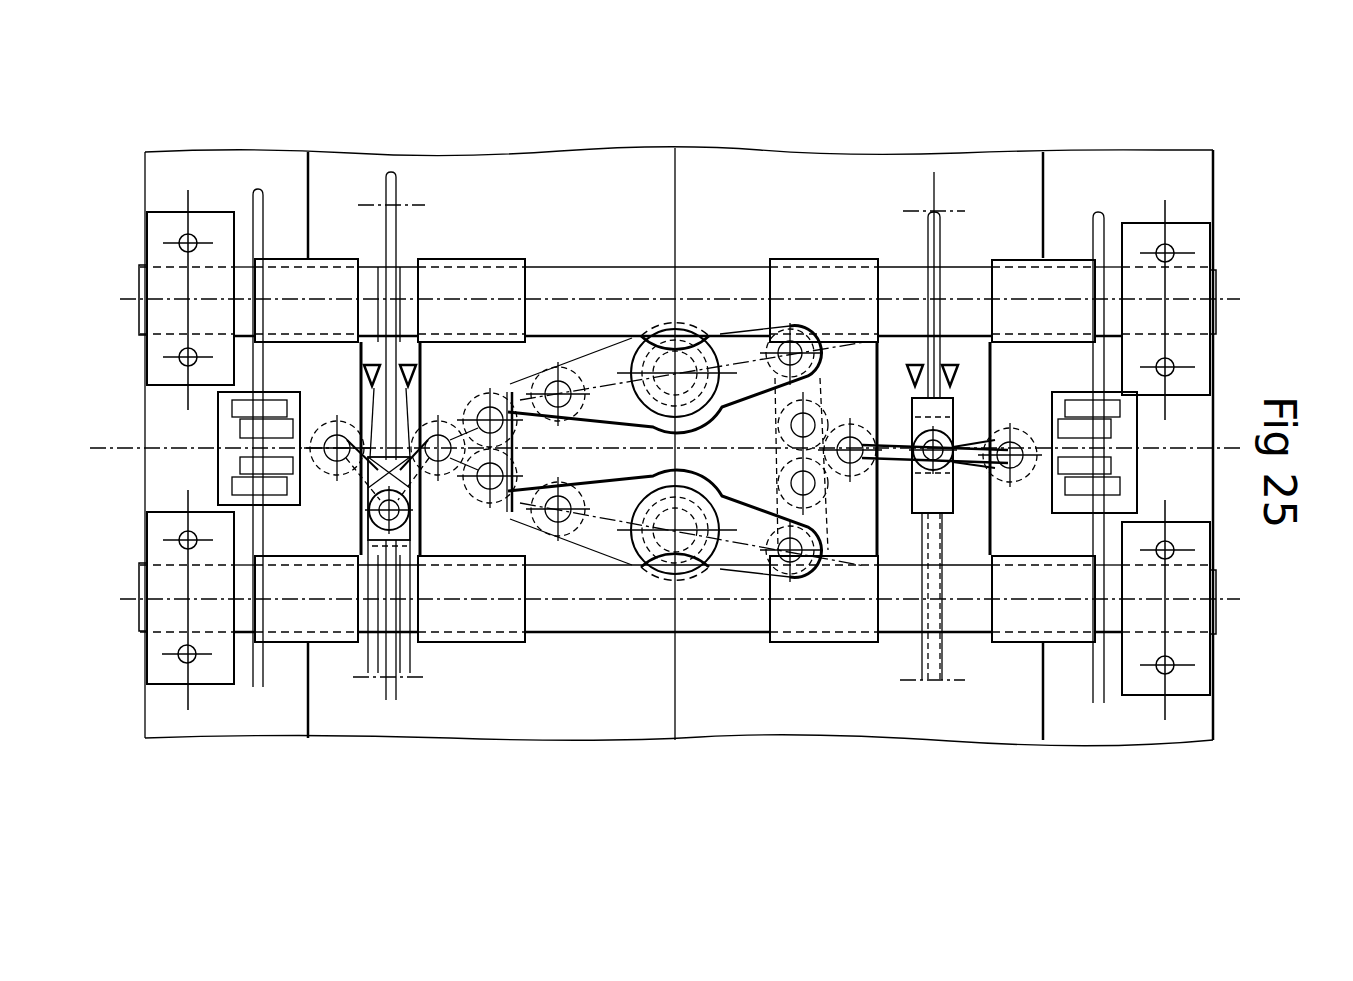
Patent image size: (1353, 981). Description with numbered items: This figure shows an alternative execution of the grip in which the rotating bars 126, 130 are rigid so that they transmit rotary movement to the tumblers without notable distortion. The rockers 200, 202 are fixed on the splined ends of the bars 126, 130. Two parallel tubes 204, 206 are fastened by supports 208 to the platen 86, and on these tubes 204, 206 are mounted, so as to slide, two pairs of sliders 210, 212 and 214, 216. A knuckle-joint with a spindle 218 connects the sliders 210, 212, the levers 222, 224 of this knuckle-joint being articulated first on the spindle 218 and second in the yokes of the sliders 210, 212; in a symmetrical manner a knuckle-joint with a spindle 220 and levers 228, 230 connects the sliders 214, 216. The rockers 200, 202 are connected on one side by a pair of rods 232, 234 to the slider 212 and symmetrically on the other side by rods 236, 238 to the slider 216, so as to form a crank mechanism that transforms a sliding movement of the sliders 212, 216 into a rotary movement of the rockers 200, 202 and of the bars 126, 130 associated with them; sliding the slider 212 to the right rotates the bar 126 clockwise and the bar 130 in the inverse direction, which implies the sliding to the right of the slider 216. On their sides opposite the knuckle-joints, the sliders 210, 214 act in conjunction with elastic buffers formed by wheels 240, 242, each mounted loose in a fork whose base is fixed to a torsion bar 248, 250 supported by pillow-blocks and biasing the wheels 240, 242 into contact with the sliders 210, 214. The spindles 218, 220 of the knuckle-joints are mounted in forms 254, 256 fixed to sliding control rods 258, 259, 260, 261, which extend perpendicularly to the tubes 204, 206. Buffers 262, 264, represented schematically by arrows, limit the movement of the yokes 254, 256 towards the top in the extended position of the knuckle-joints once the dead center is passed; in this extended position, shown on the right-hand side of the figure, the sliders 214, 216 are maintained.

The platen 86 is at (1127, 170).
The rotating bar 126 is at (663, 360).
The rotating bar 130 is at (657, 555).
The rocker 200 is at (593, 360).
The rocker 202 is at (598, 540).
The tube 204 is at (727, 280).
The tube 206 is at (743, 623).
The support 208 is at (170, 176).
The slider 210 is at (330, 620).
The slider 212 is at (490, 620).
The slider 214 is at (1037, 623).
The slider 216 is at (830, 623).
The spindle 218 is at (357, 672).
The spindle 220 is at (893, 455).
The lever 222 is at (363, 257).
The lever 224 is at (413, 250).
The lever 228 is at (985, 440).
The lever 230 is at (893, 440).
The rod 232 is at (547, 345).
The rod 234 is at (535, 505).
The rod 236 is at (780, 415).
The rod 238 is at (713, 567).
The wheel 240 is at (240, 442).
The wheel 242 is at (1118, 446).
The torsion bar 248 is at (256, 195).
The torsion bar 250 is at (1099, 214).
The form 254 is at (432, 645).
The form 256 is at (983, 465).
The sliding control rod 258 is at (392, 190).
The sliding control rod 259 is at (393, 673).
The sliding control rod 260 is at (935, 212).
The sliding control rod 261 is at (935, 668).
The buffer 262 is at (360, 377).
The buffer 264 is at (960, 378).